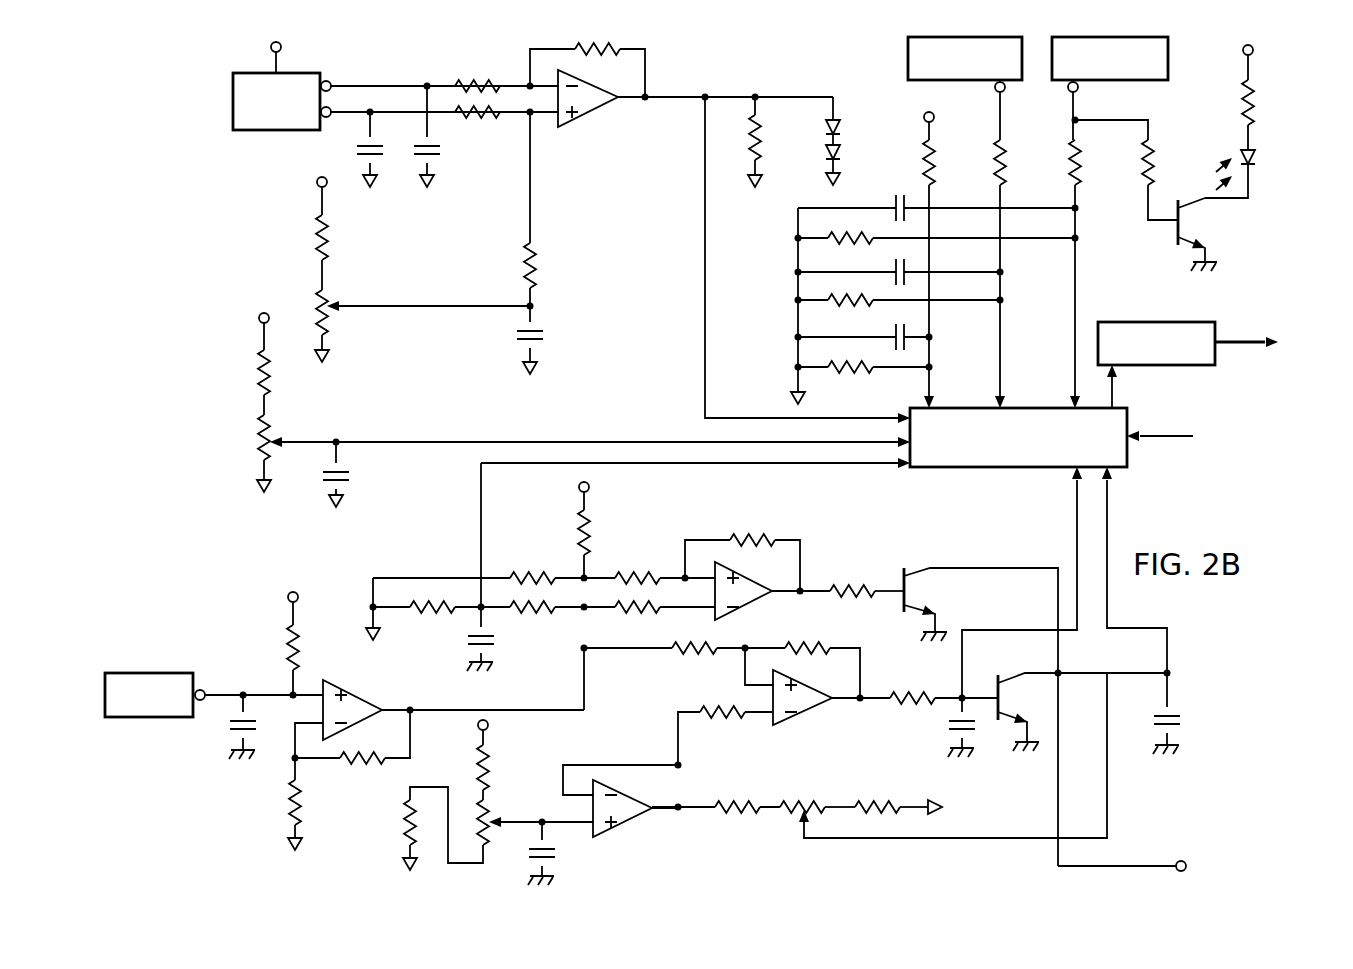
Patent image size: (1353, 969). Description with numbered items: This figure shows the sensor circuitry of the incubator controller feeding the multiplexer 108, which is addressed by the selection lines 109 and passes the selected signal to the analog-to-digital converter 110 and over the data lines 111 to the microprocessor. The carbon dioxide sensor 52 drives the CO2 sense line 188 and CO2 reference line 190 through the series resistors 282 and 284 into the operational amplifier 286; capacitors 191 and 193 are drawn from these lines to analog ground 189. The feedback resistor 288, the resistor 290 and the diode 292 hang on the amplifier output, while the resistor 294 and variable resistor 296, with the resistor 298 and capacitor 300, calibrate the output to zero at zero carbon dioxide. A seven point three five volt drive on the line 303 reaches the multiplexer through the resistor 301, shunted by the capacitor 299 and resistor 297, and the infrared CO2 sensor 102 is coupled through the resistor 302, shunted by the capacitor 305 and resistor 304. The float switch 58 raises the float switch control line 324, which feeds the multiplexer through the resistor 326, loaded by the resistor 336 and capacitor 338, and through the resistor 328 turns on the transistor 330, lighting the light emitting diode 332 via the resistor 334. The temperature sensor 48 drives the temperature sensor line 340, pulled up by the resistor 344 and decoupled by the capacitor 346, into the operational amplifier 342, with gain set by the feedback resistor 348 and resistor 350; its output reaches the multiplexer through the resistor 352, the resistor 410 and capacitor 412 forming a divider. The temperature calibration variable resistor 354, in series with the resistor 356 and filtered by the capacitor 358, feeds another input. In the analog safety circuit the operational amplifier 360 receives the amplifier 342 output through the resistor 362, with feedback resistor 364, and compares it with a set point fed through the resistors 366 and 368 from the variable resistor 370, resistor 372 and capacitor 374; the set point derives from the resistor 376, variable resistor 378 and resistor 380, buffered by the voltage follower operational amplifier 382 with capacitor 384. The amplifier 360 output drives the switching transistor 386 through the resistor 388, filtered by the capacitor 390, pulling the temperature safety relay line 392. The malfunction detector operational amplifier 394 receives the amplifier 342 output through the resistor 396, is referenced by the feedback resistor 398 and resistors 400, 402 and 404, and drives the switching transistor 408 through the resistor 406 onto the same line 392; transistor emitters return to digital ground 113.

The temperature sensor 48 is at (165, 672).
The CO2 sensor 52 is at (233, 97).
The float switch 58 is at (1168, 56).
The infrared CO2 sensor 102 is at (906, 56).
The multiplexer 108 is at (1048, 470).
The selection lines 109 is at (1160, 442).
The analog-to-digital converter 110 is at (1188, 367).
The data lines 111 is at (1236, 338).
The digital ground 113 is at (1212, 270).
The CO2 sense line 188 is at (358, 83).
The analog ground 189 is at (427, 190).
The CO2 reference line 190 is at (343, 108).
The capacitor 191 is at (437, 150).
The capacitor 193 is at (357, 152).
The series resistor 282 is at (482, 80).
The series resistor 284 is at (480, 118).
The operational amplifier 286 is at (598, 122).
The feedback resistor 288 is at (622, 55).
The resistor 290 is at (748, 128).
The diode 292 is at (827, 126).
The resistor 294 is at (333, 232).
The variable resistor 296 is at (331, 318).
The resistor 297 is at (835, 366).
The series resistor 298 is at (542, 265).
The capacitor 299 is at (908, 330).
The series capacitor 300 is at (542, 330).
The series resistor 301 is at (953, 260).
The series resistor 302 is at (1010, 160).
The line 303 is at (276, 56).
The resistor 304 is at (835, 300).
The capacitor 305 is at (893, 270).
The float switch control line 324 is at (1080, 118).
The series resistor 326 is at (1080, 180).
The series resistor 328 is at (1152, 168).
The switching transistor 330 is at (1180, 225).
The light emitting diode 332 is at (1257, 160).
The series resistor 334 is at (1256, 105).
The resistor 336 is at (835, 238).
The capacitor 338 is at (893, 202).
The temperature sensor line 340 is at (272, 690).
The operational amplifier 342 is at (355, 690).
The series resistor 344 is at (288, 655).
The capacitor 346 is at (233, 730).
The feedback resistor 348 is at (365, 765).
The series resistor 350 is at (292, 795).
The series resistor 352 is at (543, 613).
The temperature calibration variable resistor 354 is at (258, 452).
The resistor 356 is at (258, 378).
The capacitor 358 is at (346, 480).
The operational amplifier 360 is at (802, 722).
The series resistor 362 is at (695, 655).
The resistor 364 is at (808, 645).
The resistor 366 is at (730, 718).
The resistor 368 is at (745, 813).
The variable resistor 370 is at (805, 800).
The resistor 372 is at (895, 802).
The capacitor 374 is at (1178, 714).
The resistor 376 is at (477, 766).
The variable resistor 378 is at (493, 818).
The resistor 380 is at (405, 825).
The operational amplifier 382 is at (618, 836).
The series capacitor 384 is at (554, 858).
The switching transistor 386 is at (978, 692).
The series resistor 388 is at (916, 692).
The capacitor 390 is at (950, 730).
The temperature safety relay line 392 is at (1152, 863).
The operational amplifier 394 is at (740, 615).
The resistor 396 is at (640, 613).
The resistor 398 is at (760, 538).
The series resistor 400 is at (640, 574).
The series resistor 402 is at (530, 574).
The series resistor 404 is at (578, 540).
The series resistor 406 is at (858, 586).
The switching transistor 408 is at (892, 580).
The resistor 410 is at (432, 602).
The capacitor 412 is at (470, 643).